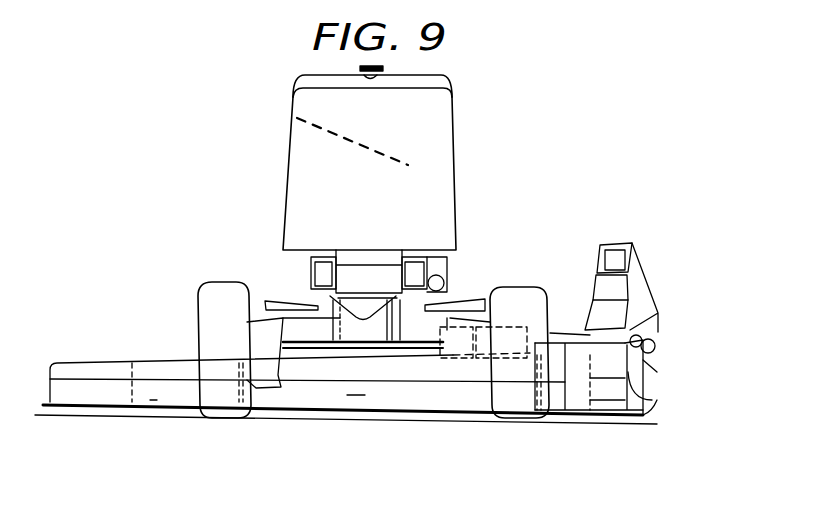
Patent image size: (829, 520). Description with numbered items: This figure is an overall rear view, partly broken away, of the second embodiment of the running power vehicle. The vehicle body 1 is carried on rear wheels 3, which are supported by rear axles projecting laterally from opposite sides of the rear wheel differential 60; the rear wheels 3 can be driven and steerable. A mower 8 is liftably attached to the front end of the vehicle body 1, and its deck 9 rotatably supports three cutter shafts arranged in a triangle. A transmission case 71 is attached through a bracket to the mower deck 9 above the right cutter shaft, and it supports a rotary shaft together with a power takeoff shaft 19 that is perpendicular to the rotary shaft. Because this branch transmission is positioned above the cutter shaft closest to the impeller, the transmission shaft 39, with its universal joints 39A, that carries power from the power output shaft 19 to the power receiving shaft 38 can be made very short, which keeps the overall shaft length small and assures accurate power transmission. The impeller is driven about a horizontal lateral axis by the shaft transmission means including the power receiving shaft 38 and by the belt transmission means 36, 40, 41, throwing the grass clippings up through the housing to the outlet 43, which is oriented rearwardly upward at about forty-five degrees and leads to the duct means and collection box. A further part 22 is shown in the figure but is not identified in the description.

The vehicle body 1 is at (468, 202).
The rear wheels 3 is at (221, 290).
The mower 8 is at (163, 360).
The mower deck 9 is at (357, 395).
The power takeoff shaft 19 is at (497, 327).
The support frame 22 is at (657, 292).
The belt transmission means 36 is at (657, 372).
The power receiving shaft 38 is at (603, 397).
The transmission shaft 39 is at (563, 357).
The universal joints 39A is at (558, 333).
The belt transmission means 40 is at (645, 417).
The belt transmission means 41 is at (652, 331).
The outlet 43 is at (618, 243).
The rear wheel differential 60 is at (337, 343).
The transmission case 71 is at (448, 358).